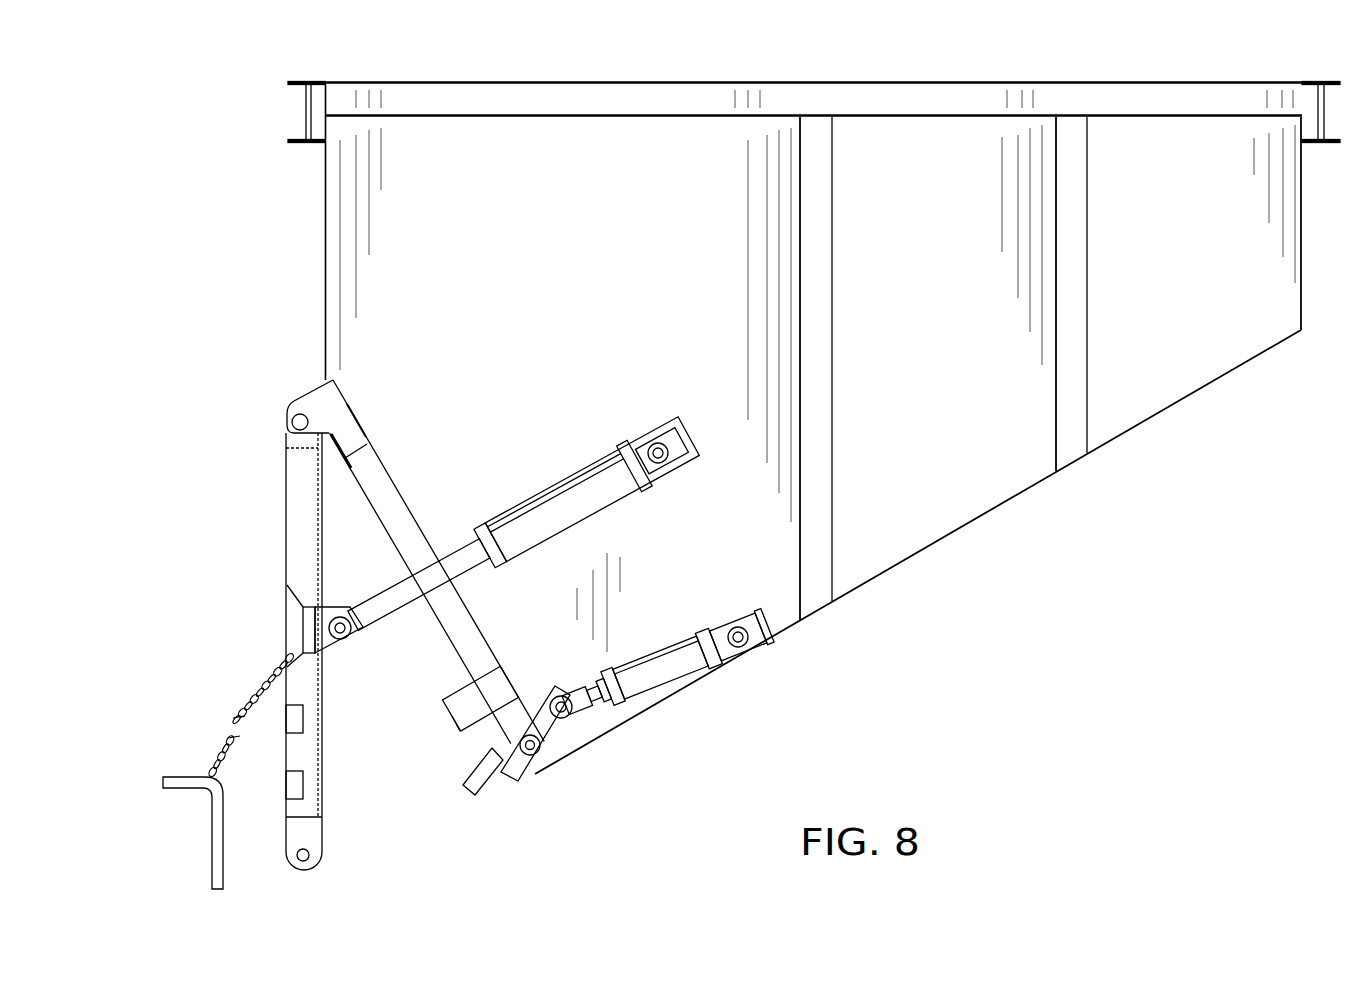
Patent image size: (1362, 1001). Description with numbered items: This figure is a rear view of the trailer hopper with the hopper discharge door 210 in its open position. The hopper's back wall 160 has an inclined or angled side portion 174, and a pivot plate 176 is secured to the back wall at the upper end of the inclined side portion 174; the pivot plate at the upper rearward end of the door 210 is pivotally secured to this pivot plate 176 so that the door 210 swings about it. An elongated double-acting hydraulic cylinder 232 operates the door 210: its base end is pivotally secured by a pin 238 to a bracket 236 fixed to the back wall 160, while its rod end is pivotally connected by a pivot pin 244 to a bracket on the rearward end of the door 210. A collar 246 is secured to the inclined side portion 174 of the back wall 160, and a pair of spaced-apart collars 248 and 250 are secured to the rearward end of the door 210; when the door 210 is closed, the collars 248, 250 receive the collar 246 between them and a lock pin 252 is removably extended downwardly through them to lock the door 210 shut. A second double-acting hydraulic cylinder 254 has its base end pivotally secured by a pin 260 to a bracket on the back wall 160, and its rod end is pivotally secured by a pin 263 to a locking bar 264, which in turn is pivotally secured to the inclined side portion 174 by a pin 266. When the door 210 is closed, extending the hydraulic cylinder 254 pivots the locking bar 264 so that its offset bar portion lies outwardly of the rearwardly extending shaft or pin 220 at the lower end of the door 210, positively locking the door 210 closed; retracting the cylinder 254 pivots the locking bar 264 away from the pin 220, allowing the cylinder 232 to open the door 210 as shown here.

The back wall 160 is at (692, 156).
The inclined side portion 174 is at (388, 472).
The pivot plate 176 is at (328, 398).
The hopper discharge door 210 is at (268, 551).
The rearwardly extending shaft or pin 220 is at (310, 855).
The double-acting hydraulic cylinder 232 is at (545, 488).
The bracket 236 is at (690, 449).
The pin 238 is at (657, 448).
The pivot pin 244 is at (338, 618).
The collar 246 is at (455, 717).
The collar 248 is at (300, 722).
The collar 250 is at (300, 786).
The lock pin 252 is at (218, 838).
The double-acting hydraulic cylinder 254 is at (676, 690).
The pin 260 is at (742, 640).
The pin 263 is at (570, 713).
The locking bar 264 is at (519, 782).
The pin 266 is at (512, 770).